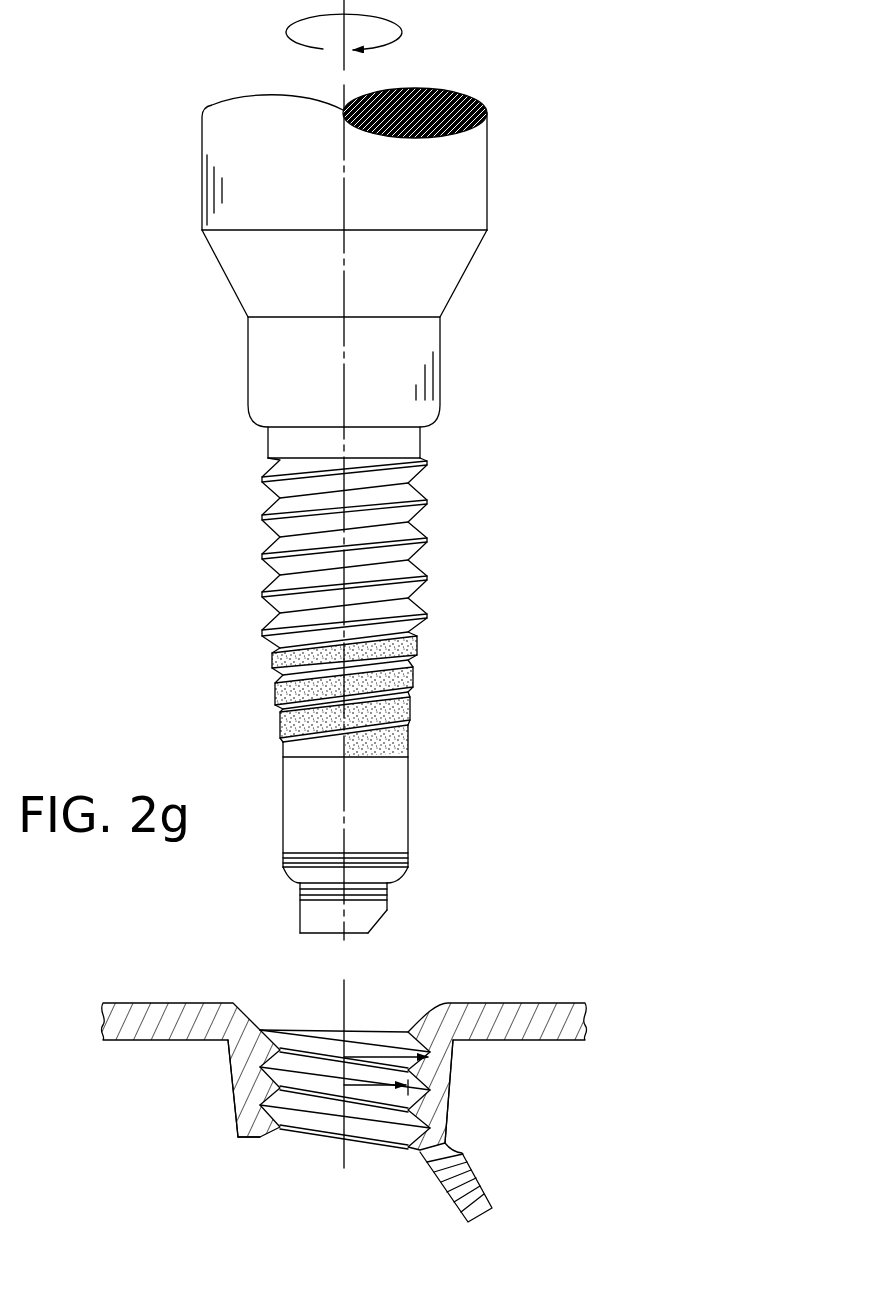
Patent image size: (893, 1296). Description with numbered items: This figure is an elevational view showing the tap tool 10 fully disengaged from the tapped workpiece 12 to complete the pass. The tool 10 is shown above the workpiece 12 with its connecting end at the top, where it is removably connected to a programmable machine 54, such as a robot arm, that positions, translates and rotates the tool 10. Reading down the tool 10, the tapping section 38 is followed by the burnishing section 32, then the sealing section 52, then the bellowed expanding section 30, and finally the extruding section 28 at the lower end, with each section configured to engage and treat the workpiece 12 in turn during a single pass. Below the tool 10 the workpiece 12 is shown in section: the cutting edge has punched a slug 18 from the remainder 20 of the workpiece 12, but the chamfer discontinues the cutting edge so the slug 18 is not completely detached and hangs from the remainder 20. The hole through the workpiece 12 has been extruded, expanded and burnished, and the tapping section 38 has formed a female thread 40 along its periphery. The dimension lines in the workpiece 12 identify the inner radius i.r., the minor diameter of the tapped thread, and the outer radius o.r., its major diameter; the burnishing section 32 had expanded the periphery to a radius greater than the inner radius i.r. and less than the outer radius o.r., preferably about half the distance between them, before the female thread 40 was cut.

The tap tool 10 is at (160, 548).
The workpiece 12 is at (570, 1042).
The slug 18 is at (518, 1182).
The remainder 20 is at (162, 1040).
The extruding section 28 is at (380, 890).
The expanding section 30 is at (417, 873).
The burnishing section 32 is at (420, 702).
The tapping section 38 is at (452, 585).
The female thread 40 is at (320, 1123).
The sealing section 52 is at (414, 812).
The programmable machine 54 is at (452, 357).
The outer radius o.r. is at (432, 1057).
The inner radius i.r. is at (410, 1090).